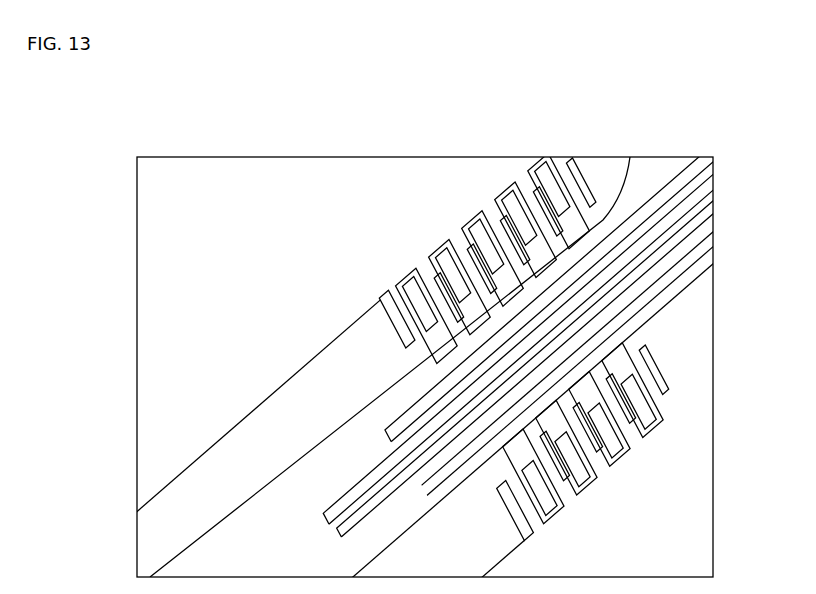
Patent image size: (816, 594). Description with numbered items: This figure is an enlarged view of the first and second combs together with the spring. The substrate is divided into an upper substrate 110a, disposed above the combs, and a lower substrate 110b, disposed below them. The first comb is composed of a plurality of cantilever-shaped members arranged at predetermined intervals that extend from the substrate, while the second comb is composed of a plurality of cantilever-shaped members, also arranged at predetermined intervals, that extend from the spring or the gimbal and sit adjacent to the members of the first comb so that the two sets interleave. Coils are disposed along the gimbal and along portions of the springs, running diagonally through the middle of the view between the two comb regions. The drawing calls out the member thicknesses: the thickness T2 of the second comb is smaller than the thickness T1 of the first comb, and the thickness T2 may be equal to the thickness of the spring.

The upper substrate 110a is at (313, 186).
The lower substrate 110b is at (690, 487).
The thickness of the first comb T1 is at (421, 309).
The thickness of the second comb T2 is at (457, 329).